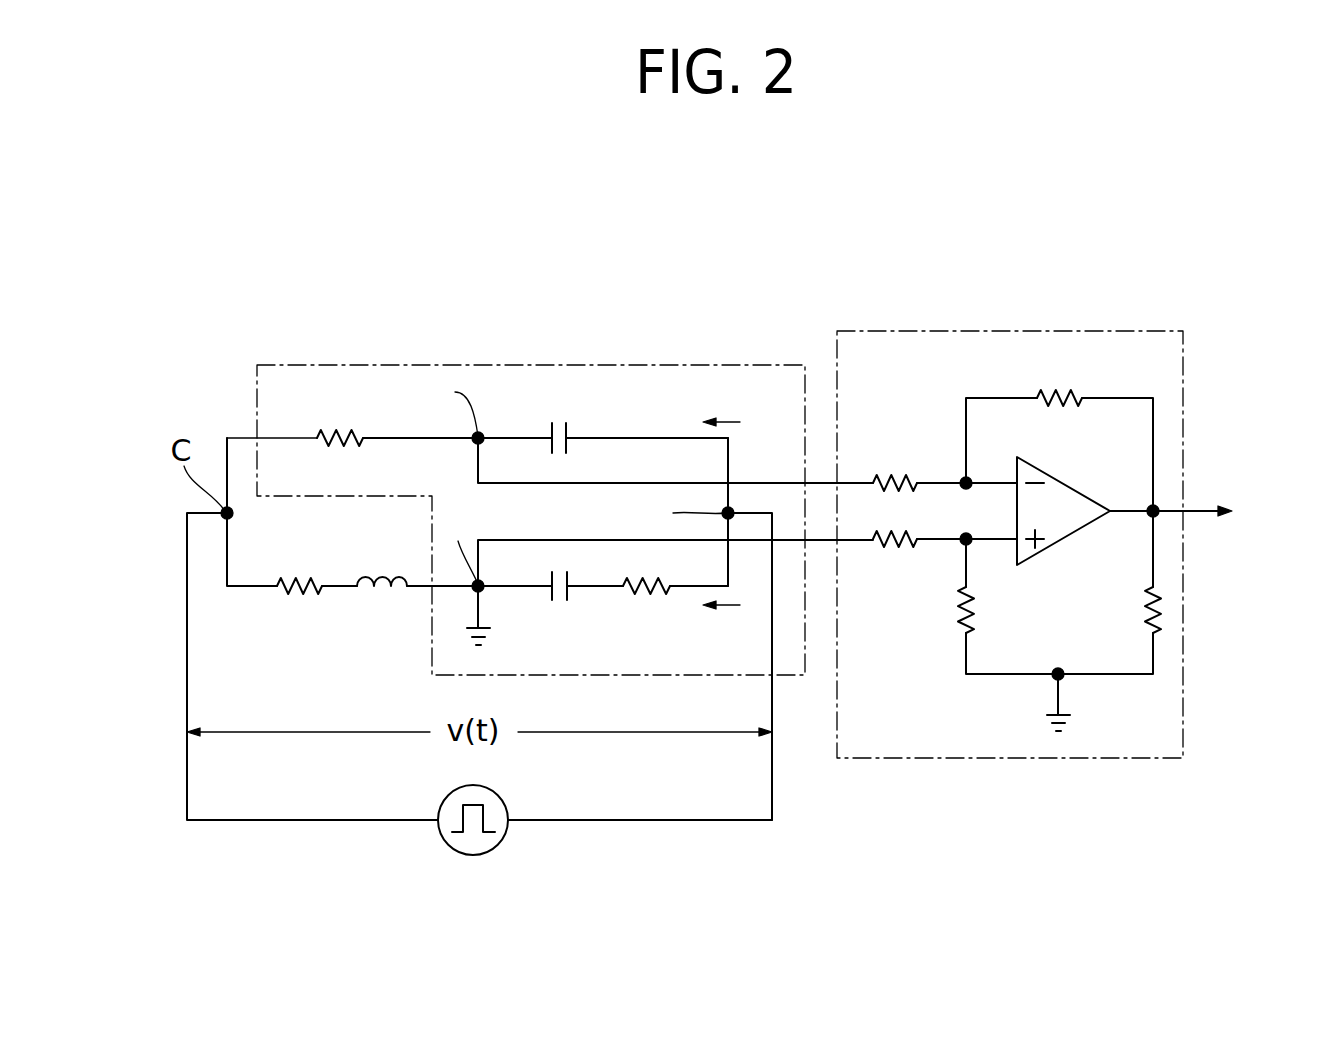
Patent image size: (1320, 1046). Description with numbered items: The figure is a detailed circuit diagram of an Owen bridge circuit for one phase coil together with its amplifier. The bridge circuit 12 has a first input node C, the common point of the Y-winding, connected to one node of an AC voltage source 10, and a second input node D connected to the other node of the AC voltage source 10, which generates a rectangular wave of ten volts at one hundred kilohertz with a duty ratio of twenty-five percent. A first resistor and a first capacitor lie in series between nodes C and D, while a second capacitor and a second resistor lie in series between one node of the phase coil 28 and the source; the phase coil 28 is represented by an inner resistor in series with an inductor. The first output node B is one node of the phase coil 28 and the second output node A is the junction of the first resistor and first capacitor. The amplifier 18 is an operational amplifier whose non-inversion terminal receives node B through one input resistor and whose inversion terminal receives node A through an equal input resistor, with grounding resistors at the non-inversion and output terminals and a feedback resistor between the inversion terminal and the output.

The AC voltage source 10 is at (457, 853).
The bridge circuit 12 is at (535, 364).
The amplifier 18 is at (1007, 330).
The phase coil 28 is at (277, 603).